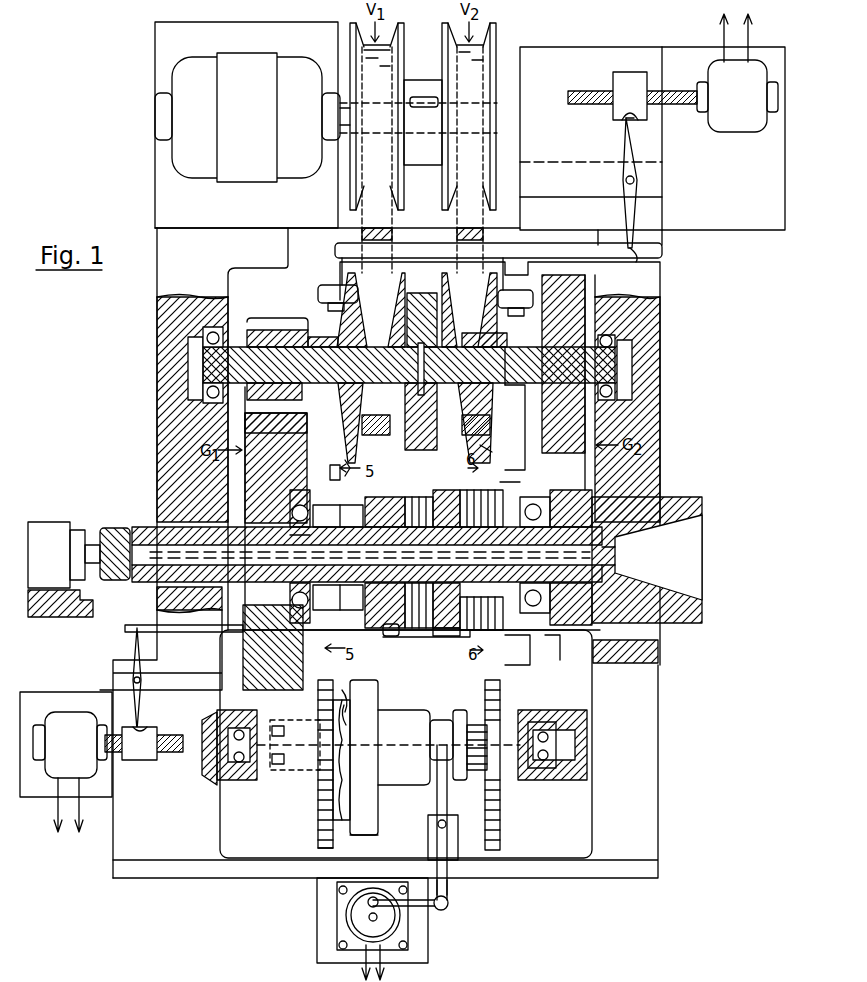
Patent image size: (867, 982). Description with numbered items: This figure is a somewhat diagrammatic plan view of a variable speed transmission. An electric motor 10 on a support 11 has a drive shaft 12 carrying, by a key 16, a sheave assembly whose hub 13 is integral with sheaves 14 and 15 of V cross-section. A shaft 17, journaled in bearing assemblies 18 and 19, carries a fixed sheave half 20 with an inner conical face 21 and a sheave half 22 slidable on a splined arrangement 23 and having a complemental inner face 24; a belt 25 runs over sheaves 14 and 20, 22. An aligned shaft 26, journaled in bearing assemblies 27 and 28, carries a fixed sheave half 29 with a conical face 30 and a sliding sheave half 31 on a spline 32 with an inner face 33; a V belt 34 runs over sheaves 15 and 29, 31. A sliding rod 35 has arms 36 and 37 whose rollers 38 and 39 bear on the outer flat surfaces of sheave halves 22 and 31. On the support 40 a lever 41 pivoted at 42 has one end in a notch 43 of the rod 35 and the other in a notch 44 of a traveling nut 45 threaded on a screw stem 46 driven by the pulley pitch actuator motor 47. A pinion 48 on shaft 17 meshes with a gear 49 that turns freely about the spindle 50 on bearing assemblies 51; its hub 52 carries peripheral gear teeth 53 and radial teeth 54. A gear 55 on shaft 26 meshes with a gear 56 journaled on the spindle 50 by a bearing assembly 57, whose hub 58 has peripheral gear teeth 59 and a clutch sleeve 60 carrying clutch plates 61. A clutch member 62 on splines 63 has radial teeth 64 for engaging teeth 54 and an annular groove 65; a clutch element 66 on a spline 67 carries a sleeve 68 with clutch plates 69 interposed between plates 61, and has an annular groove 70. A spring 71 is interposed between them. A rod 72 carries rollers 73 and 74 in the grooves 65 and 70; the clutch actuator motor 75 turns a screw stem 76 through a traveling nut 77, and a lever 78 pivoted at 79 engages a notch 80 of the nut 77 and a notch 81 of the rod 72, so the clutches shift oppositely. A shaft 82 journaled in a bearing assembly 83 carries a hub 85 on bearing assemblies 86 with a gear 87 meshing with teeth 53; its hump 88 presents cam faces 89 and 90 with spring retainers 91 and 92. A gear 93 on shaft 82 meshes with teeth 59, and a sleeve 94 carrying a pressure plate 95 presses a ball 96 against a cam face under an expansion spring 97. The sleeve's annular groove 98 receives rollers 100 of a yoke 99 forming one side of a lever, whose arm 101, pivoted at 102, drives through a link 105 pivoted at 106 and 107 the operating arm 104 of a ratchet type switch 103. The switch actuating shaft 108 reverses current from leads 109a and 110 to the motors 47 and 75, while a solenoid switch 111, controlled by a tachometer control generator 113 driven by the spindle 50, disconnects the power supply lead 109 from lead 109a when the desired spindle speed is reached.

The electric motor 10 is at (182, 150).
The support 11 is at (155, 62).
The drive shaft 12 is at (345, 98).
The hub 13 is at (425, 88).
The sheave 14 is at (393, 28).
The sheave 15 is at (491, 28).
The key 16 is at (418, 107).
The shaft 17 is at (325, 385).
The bearing assembly 18 is at (225, 333).
The bearing assembly 19 is at (420, 335).
The sheave half 20 is at (405, 280).
The inner conical face 21 is at (386, 440).
The sheave half 22 is at (346, 425).
The splined arrangement 23 is at (322, 347).
The inner face 24 is at (353, 470).
The belt 25 is at (392, 218).
The shaft 26 is at (508, 388).
The bearing assembly 27 is at (615, 345).
The bearing assembly 28 is at (425, 430).
The sheave half 29 is at (450, 292).
The inner conical face 30 is at (440, 458).
The sheave half 31 is at (494, 434).
The spline 32 is at (520, 352).
The inner face 33 is at (492, 452).
The V belt 34 is at (483, 220).
The rod 35 is at (662, 250).
The arm 36 is at (332, 248).
The arm 37 is at (512, 278).
The roller 38 is at (318, 294).
The roller 39 is at (512, 310).
The support 40 is at (752, 228).
The lever 41 is at (624, 182).
The pivot 42 is at (636, 180).
The notch 43 is at (636, 260).
The notch 44 is at (628, 122).
The traveling nut 45 is at (614, 74).
The screw stem 46 is at (568, 97).
The pulley pitch actuator motor 47 is at (729, 130).
The pinion 48 is at (268, 330).
The gear 49 is at (260, 438).
The spindle 50 is at (152, 530).
The bearing assemblies 51 is at (292, 542).
The hub 52 is at (338, 516).
The peripheral gear teeth 53 is at (332, 466).
The radial teeth 54 is at (351, 516).
The gear 55 is at (576, 296).
The gear 56 is at (548, 640).
The bearing assembly 57 is at (538, 540).
The hub 58 is at (514, 638).
The peripheral gear teeth 59 is at (503, 482).
The clutch sleeve 60 is at (455, 636).
The clutch plates 61 is at (492, 620).
The clutch member 62 is at (383, 503).
The splines 63 is at (338, 597).
The radial teeth 64 is at (351, 600).
The annular groove 65 is at (419, 504).
The clutch element 66 is at (458, 537).
The spline 67 is at (460, 583).
The sleeve 68 is at (494, 548).
The clutch plates 69 is at (546, 508).
The annular groove 70 is at (467, 501).
The spring 71 is at (419, 605).
The rod 72 is at (124, 628).
The roller 73 is at (388, 636).
The roller 74 is at (432, 640).
The clutch actuator motor 75 is at (46, 778).
The screw stem 76 is at (168, 754).
The traveling nut 77 is at (140, 762).
The lever 78 is at (142, 722).
The pivot 79 is at (133, 680).
The notch 80 is at (150, 728).
The notch 81 is at (132, 634).
The shaft 82 is at (208, 776).
The bearing assembly 83 is at (234, 782).
The hub 85 is at (306, 762).
The bearing assemblies 86 is at (270, 772).
The gear 87 is at (318, 818).
The hump 88 is at (346, 740).
The cam face 89 is at (526, 776).
The cam face 90 is at (342, 770).
The spring retainer 91 is at (330, 676).
The spring retainer 92 is at (340, 828).
The gear 93 is at (502, 706).
The sleeve 94 is at (416, 710).
The pressure plate 95 is at (378, 826).
The ball 96 is at (353, 709).
The expansion spring 97 is at (470, 778).
The annular groove 98 is at (459, 710).
The yoke 99 is at (437, 800).
The rollers 100 is at (430, 745).
The arm 101 is at (448, 885).
The pivot 102 is at (447, 824).
The ratchet type switch 103 is at (320, 930).
The operating arm 104 is at (346, 910).
The link 105 is at (428, 910).
The pivotal connection 106 is at (376, 896).
The pivotal connection 107 is at (450, 906).
The actuating shaft 108 is at (380, 920).
The power supply lead 109 is at (386, 960).
The lead 109a is at (269, 974).
The lead 110 is at (362, 960).
The solenoid switch 111 is at (492, 974).
The tachometer control generator 113 is at (54, 512).